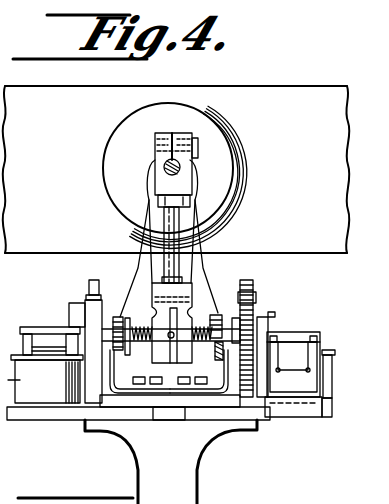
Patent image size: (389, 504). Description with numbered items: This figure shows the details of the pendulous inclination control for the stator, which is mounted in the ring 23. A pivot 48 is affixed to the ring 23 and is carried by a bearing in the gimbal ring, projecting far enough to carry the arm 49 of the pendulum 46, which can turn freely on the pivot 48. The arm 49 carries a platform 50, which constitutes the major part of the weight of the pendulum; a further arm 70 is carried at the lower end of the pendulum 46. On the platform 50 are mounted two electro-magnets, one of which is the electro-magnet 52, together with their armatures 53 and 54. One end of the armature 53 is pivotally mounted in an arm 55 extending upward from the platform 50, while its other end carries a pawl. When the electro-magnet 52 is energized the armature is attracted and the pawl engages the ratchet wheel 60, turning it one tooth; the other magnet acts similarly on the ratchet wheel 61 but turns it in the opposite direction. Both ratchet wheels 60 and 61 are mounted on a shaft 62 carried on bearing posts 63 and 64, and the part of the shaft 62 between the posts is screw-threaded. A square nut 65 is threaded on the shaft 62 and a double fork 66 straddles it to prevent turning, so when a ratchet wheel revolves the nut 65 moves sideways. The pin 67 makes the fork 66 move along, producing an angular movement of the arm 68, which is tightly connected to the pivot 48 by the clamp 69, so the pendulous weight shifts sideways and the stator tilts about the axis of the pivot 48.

The ring 23 is at (176, 169).
The pendulum 46 is at (138, 246).
The pivot 48 is at (182, 168).
The arm 49 is at (198, 246).
The platform 50 is at (62, 412).
The electro-magnet 52 is at (328, 365).
The armature 53 is at (303, 337).
The armature 54 is at (27, 331).
The arm 55 is at (308, 398).
The ratchet wheel 60 is at (255, 290).
The ratchet wheel 61 is at (88, 278).
The shaft 62 is at (218, 318).
The bearing post 63 is at (133, 393).
The bearing post 64 is at (207, 393).
The nut 65 is at (156, 312).
The double fork 66 is at (182, 290).
The pin 67 is at (168, 338).
The arm 68 is at (170, 236).
The clamp 69 is at (173, 158).
The arm 70 is at (190, 477).